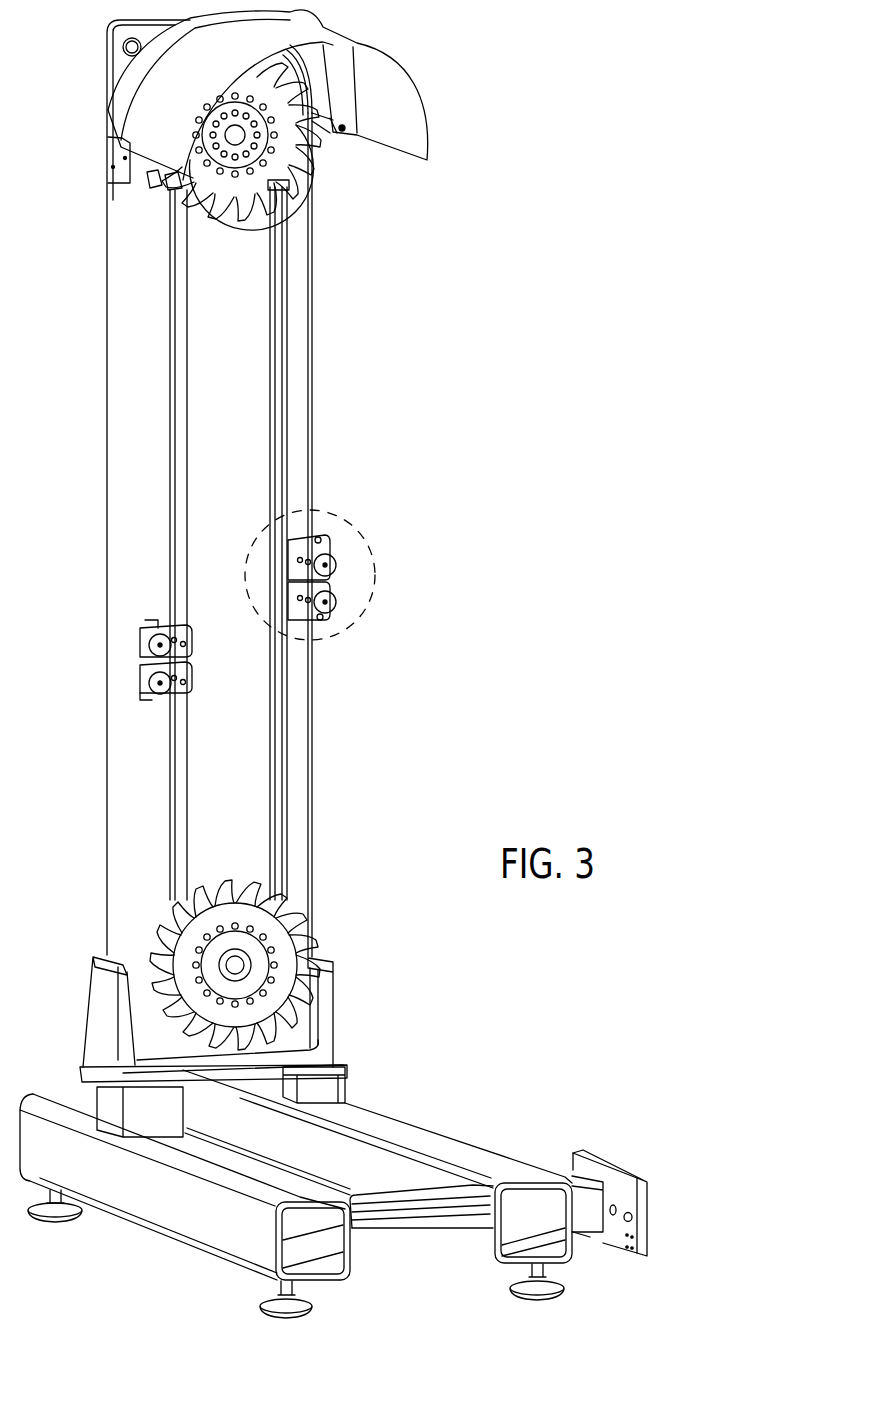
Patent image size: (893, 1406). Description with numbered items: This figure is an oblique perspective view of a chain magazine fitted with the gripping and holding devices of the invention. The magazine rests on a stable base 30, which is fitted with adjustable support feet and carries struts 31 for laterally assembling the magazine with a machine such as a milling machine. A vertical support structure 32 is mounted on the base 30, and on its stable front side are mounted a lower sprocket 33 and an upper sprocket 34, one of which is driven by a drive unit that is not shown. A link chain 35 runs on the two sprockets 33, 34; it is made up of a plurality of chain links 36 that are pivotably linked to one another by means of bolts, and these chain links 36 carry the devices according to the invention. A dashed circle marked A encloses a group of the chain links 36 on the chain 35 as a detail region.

The base 30 is at (157, 1208).
The struts 31 is at (617, 1237).
The vertical support structure 32 is at (133, 417).
The lower sprocket 33 is at (263, 1006).
The upper sprocket 34 is at (263, 177).
The link chain 35 is at (283, 283).
The chain links 36 is at (148, 628).
The detail region A is at (340, 518).